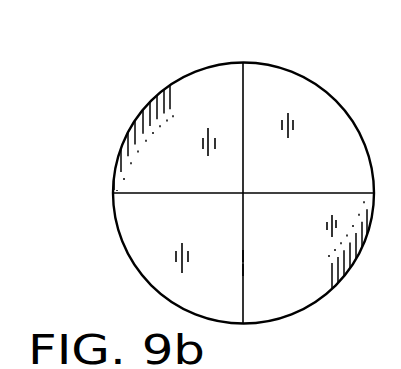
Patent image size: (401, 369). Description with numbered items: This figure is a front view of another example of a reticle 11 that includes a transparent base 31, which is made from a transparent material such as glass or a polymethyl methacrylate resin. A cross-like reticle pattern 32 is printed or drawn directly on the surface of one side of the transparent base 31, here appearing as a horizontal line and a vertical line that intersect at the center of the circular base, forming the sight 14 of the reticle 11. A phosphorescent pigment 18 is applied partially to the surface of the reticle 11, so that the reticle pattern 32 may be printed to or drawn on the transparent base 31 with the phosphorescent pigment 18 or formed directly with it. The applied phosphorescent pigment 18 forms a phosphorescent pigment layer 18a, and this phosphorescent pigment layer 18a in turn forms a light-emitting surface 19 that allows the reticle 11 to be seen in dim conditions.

The reticle 11 is at (318, 52).
The transparent base 31 is at (325, 93).
The reticle pattern 32 is at (325, 193).
The sight 14 is at (244, 192).
The phosphorescent pigment 18 is at (245, 246).
The phosphorescent pigment layer 18a is at (245, 259).
The light-emitting surface 19 is at (245, 268).